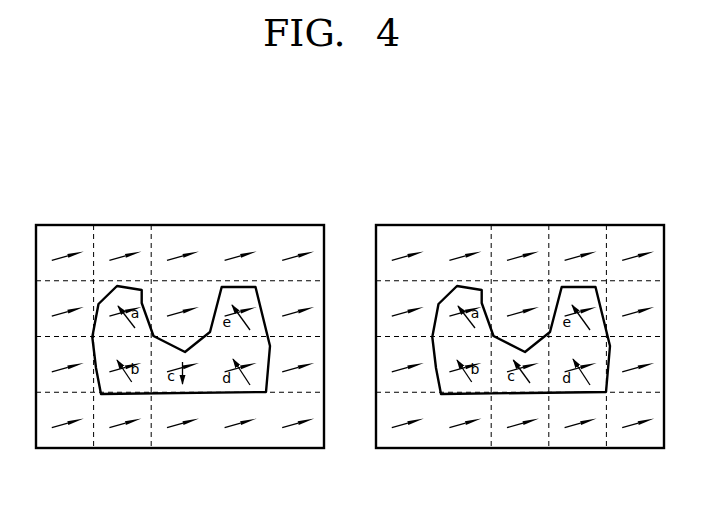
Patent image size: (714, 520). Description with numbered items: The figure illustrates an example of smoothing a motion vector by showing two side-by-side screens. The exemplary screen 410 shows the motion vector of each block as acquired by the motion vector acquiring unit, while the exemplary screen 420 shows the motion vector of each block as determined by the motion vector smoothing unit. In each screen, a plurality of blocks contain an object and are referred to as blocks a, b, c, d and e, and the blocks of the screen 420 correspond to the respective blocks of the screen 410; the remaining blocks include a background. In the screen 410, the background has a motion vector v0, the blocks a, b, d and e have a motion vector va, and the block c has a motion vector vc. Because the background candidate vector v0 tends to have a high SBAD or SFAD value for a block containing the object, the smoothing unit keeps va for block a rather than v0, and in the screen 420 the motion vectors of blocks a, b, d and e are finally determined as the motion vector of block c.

The exemplary screen 410 is at (163, 215).
The exemplary screen 420 is at (520, 344).